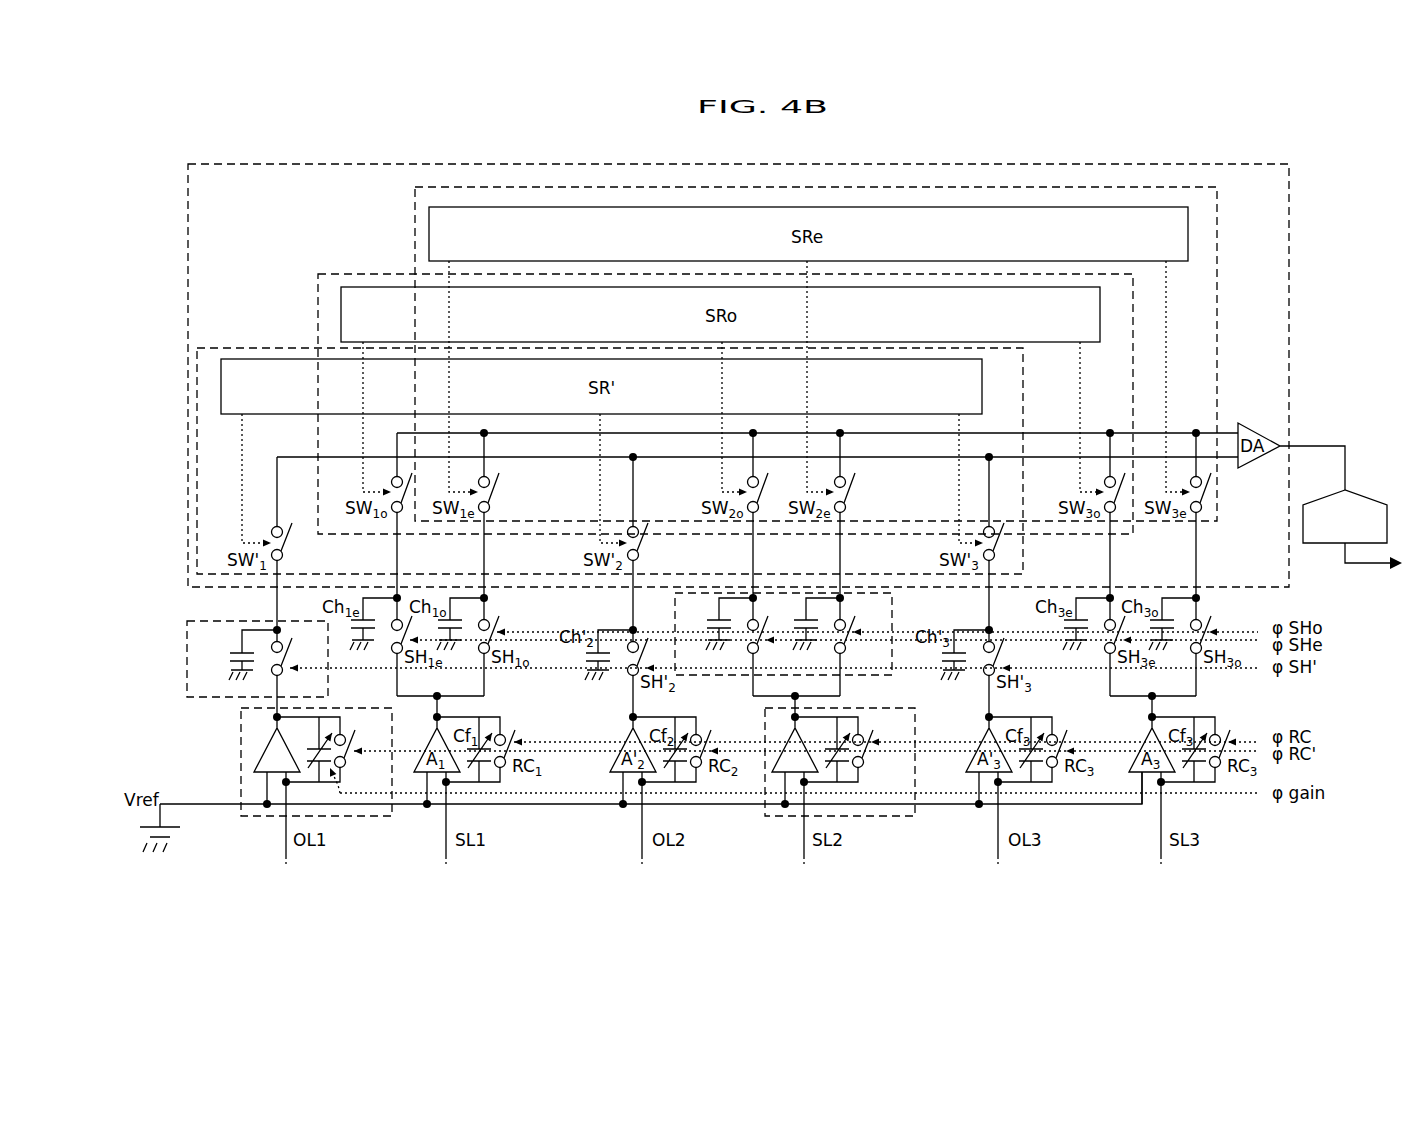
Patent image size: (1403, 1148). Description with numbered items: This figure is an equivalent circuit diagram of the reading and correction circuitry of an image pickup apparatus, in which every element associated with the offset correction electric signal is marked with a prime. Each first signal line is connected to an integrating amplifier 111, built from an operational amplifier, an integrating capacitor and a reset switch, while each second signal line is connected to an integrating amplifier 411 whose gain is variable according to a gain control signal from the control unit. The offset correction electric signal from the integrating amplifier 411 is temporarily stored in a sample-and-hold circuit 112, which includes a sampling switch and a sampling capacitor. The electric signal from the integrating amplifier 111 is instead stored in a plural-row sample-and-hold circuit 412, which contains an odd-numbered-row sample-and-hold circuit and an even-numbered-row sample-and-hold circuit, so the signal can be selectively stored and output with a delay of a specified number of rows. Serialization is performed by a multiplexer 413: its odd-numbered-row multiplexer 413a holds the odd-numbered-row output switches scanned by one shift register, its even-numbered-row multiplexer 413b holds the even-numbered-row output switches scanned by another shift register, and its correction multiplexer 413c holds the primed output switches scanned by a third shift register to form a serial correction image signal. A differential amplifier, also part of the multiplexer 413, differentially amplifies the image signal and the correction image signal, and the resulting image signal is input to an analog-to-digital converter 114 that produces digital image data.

The multiplexer 413 is at (1258, 172).
The odd-numbered-row multiplexer 413a is at (415, 200).
The even-numbered-row multiplexer 413b is at (318, 288).
The correction multiplexer 413c is at (197, 362).
The sample-and-hold circuit 112 is at (208, 690).
The plural-row sample-and-hold circuit 412 is at (893, 676).
The integrating amplifier 411 is at (315, 797).
The integrating amplifier 111 is at (877, 788).
The analog-to-digital converter 114 is at (1326, 536).